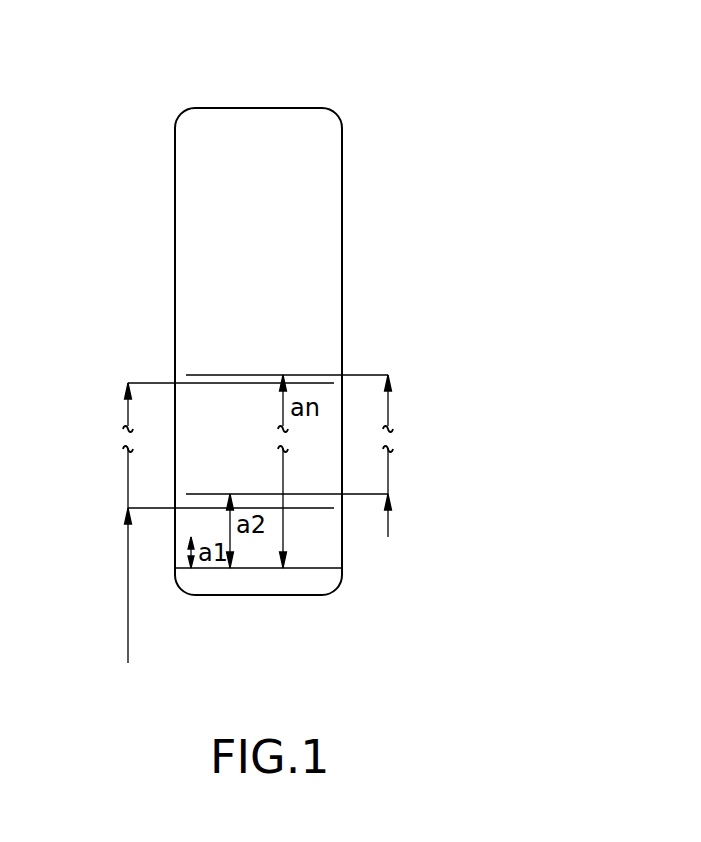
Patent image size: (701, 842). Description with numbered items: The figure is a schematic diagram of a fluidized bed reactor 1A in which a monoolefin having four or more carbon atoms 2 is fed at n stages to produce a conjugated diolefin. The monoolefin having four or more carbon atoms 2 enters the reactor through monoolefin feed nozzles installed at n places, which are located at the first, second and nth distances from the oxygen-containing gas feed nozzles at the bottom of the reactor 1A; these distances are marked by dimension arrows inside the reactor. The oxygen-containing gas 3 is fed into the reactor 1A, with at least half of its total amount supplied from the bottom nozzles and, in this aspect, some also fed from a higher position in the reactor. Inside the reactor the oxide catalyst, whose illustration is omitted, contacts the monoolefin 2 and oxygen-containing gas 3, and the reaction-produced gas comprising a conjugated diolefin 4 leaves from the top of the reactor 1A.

The fluidized bed reactor 1A is at (277, 182).
The monoolefin having four or more carbon atoms 2 is at (175, 537).
The oxygen-containing gas 3 is at (260, 568).
The reaction-produced gas comprising a conjugated diolefin 4 is at (313, 75).